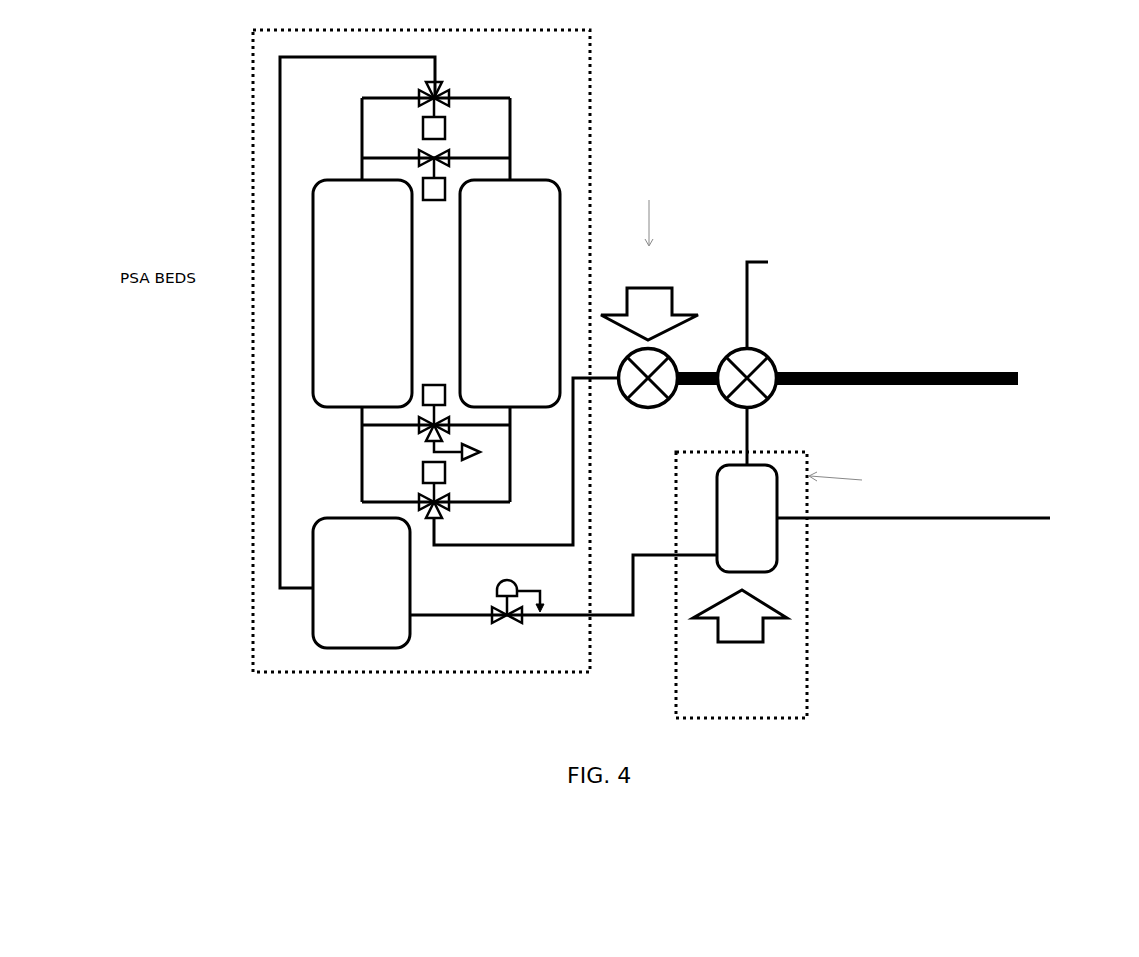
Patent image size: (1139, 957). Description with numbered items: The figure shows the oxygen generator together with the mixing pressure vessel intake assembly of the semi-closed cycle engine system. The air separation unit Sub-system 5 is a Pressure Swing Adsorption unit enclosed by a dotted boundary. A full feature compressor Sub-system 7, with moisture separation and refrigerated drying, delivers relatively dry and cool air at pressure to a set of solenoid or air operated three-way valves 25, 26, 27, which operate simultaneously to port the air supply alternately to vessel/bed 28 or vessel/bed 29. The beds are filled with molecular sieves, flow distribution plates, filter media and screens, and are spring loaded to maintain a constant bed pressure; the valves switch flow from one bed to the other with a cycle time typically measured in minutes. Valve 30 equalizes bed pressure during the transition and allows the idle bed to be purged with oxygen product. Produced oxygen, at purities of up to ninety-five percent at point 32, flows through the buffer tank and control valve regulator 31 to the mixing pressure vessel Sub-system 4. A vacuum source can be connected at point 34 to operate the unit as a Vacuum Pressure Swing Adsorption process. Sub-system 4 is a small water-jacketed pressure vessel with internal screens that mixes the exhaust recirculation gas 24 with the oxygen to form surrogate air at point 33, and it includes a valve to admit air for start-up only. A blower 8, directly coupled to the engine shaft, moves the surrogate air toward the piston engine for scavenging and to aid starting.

The mixing pressure vessel sub-system 4 is at (818, 585).
The air separation unit sub-system 5 is at (397, 351).
The full feature compressor sub-system 7 is at (671, 287).
The blower 8 is at (847, 335).
The exhaust recirculation gas 24 is at (913, 534).
The three-way valve 25 is at (490, 461).
The three-way valve 26 is at (436, 391).
The three-way valve 27 is at (436, 121).
The vessel/bed 28 is at (362, 293).
The vessel/bed 29 is at (510, 293).
The valve 30 is at (436, 196).
The buffer tank and control valve regulator 31 is at (361, 583).
The oxygen product point 32 is at (563, 584).
The surrogate air point 33 is at (766, 436).
The vacuum connection point 34 is at (466, 459).